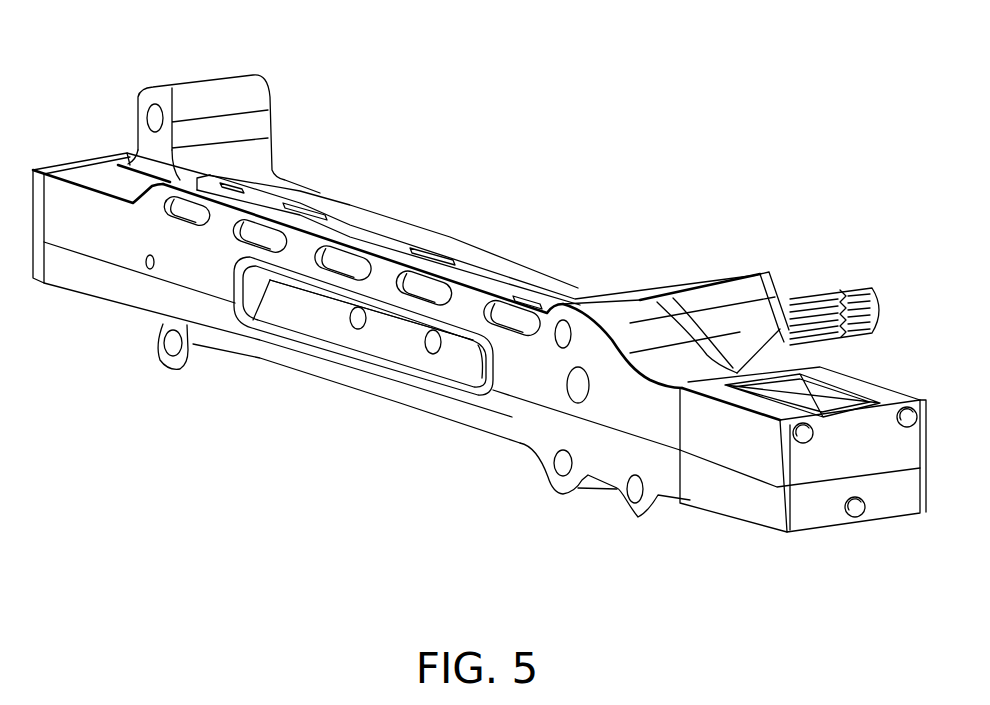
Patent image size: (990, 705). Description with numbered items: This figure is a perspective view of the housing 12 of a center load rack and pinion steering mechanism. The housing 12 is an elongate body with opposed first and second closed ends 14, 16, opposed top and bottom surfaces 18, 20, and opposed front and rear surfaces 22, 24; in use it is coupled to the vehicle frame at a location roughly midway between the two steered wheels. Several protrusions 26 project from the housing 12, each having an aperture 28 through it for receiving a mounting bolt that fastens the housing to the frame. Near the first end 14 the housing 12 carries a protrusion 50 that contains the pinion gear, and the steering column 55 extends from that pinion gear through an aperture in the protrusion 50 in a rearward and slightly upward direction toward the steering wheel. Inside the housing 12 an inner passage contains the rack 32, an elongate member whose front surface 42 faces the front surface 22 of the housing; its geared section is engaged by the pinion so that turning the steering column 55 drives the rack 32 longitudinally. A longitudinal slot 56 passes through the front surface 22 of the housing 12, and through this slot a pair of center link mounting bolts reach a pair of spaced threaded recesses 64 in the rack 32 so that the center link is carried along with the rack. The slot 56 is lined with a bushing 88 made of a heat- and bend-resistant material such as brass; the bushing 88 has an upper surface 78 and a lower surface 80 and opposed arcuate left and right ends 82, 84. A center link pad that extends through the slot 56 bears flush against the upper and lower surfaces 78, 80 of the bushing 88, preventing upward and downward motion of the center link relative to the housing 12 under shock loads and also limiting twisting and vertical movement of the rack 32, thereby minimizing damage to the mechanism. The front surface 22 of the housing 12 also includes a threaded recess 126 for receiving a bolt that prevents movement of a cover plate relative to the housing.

The housing 12 is at (80, 210).
The first closed end 14 is at (770, 515).
The second closed end 16 is at (41, 290).
The top surface 18 is at (336, 210).
The bottom surface 20 is at (312, 380).
The front surface 22 is at (142, 305).
The rear surface 24 is at (420, 224).
The protrusions 26 is at (210, 95).
The apertures 28 is at (152, 120).
The rack 32 is at (320, 312).
The front surface of the rack 42 is at (397, 332).
The protrusion 50 is at (712, 296).
The steering column 55 is at (835, 305).
The longitudinal slot 56 is at (463, 363).
The threaded recesses 64 is at (430, 352).
The upper surface of the bushing 78 is at (306, 296).
The lower surface of the bushing 80 is at (342, 250).
The left end of the bushing 82 is at (252, 303).
The right end of the bushing 84 is at (483, 383).
The bushing 88 is at (280, 270).
The threaded recess 126 is at (147, 264).